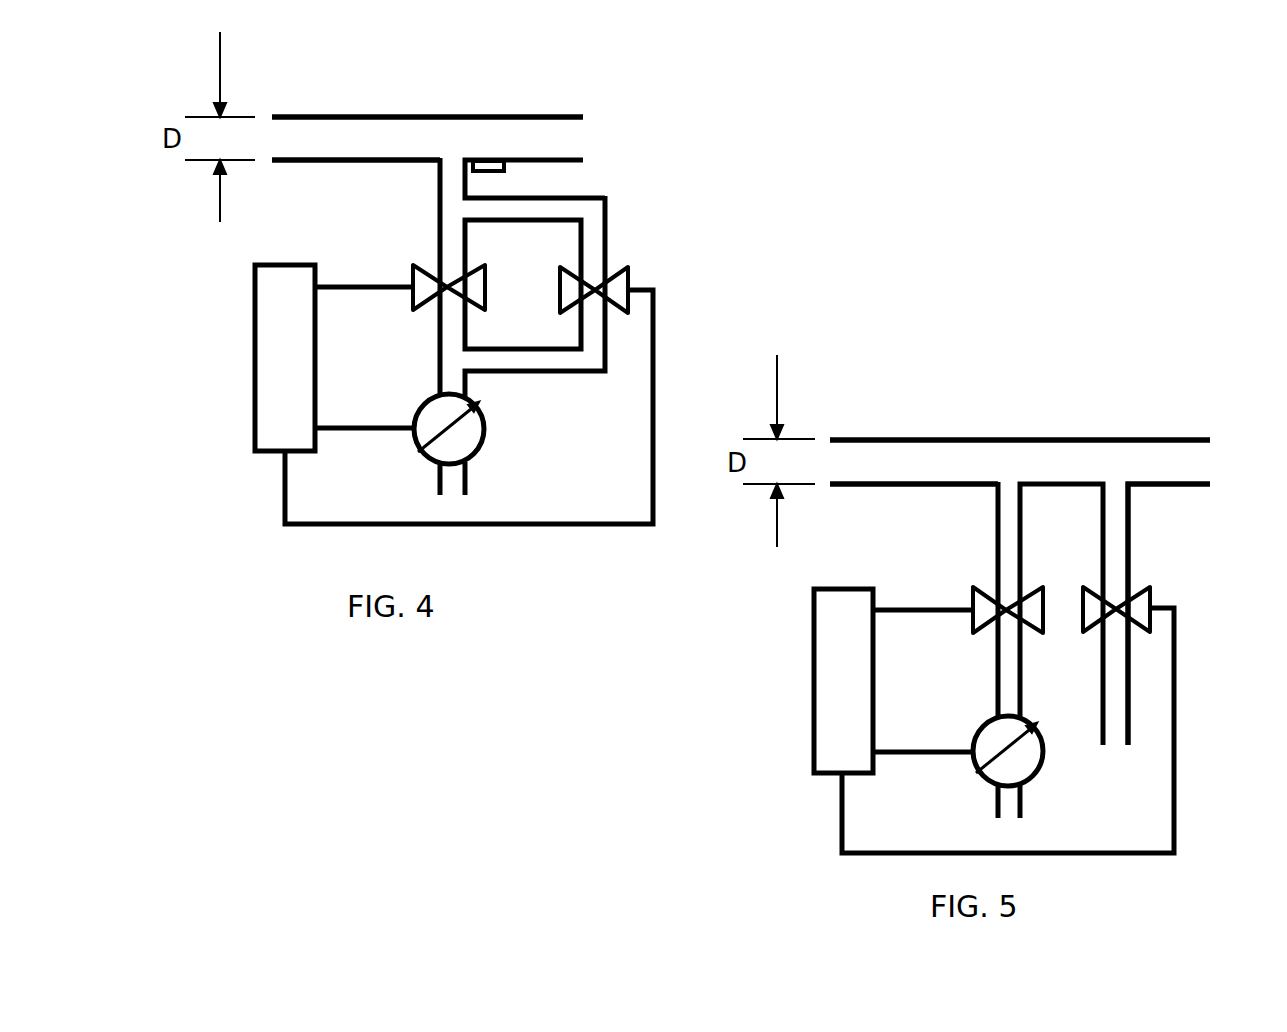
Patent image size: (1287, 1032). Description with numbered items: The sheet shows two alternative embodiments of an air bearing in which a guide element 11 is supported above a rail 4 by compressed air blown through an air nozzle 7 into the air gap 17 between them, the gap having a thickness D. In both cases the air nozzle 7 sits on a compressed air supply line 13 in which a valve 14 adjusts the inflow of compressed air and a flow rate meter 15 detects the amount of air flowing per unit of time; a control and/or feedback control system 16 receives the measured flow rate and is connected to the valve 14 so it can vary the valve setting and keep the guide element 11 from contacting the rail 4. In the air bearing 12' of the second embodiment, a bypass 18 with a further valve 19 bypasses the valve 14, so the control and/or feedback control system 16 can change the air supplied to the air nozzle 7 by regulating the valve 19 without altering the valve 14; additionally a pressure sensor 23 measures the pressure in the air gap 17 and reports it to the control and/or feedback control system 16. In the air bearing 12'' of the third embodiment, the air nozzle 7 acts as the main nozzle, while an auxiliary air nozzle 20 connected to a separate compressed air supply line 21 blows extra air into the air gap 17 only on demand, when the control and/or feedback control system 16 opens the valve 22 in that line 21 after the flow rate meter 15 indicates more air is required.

In FIG. 4, the rail 4 is at (547, 180).
In FIG. 5, the rail 4 is at (1158, 508).
In FIG. 4, the air nozzle 7 is at (445, 165).
In FIG. 5, the air nozzle 7 is at (993, 492).
In FIG. 4, the guide element 11 is at (427, 102).
In FIG. 5, the guide element 11 is at (1020, 426).
In FIG. 4, the air bearing 12' is at (362, 342).
In FIG. 5, the air bearing 12'' is at (895, 667).
In FIG. 4, the compressed air supply line 13 is at (437, 238).
In FIG. 5, the compressed air supply line 13 is at (995, 557).
In FIG. 4, the valve 14 is at (430, 290).
In FIG. 5, the valve 14 is at (987, 612).
In FIG. 4, the flow rate meter 15 is at (460, 430).
In FIG. 5, the flow rate meter 15 is at (1018, 752).
In FIG. 4, the control and/or feedback control system 16 is at (272, 347).
In FIG. 5, the control and/or feedback control system 16 is at (830, 668).
In FIG. 4, the air gap 17 is at (448, 133).
In FIG. 5, the air gap 17 is at (1008, 455).
In FIG. 4, the bypass 18 is at (608, 243).
In FIG. 4, the further valve 19 is at (628, 282).
In FIG. 5, the auxiliary air nozzle 20 is at (1115, 485).
In FIG. 5, the separate compressed air supply line 21 is at (1132, 540).
In FIG. 5, the valve 22 is at (1133, 608).
In FIG. 4, the pressure sensor 23 is at (492, 164).